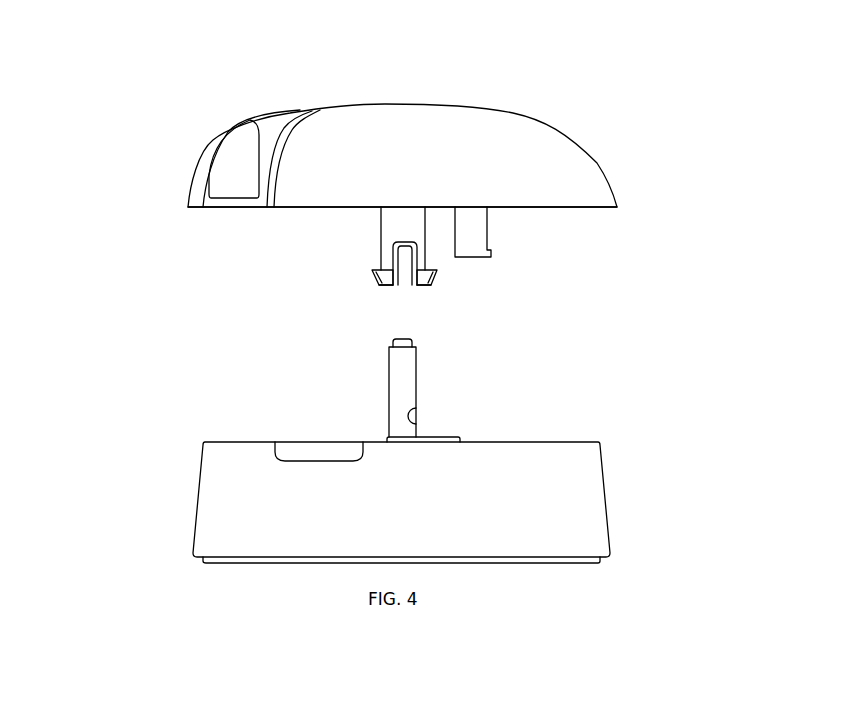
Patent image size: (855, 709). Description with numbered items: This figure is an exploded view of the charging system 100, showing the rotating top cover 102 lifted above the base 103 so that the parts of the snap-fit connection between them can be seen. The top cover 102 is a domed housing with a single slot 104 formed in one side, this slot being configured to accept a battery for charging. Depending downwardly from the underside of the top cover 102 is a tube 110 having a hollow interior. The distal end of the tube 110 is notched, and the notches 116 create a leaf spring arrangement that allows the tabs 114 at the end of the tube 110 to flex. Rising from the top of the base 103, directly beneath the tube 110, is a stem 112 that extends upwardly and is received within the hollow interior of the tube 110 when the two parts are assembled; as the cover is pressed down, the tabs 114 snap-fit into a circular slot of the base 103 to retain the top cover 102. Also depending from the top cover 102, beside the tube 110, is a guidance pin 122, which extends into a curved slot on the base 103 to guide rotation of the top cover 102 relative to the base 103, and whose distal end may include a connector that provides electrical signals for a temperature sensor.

The charging system 100 is at (577, 77).
The top cover 102 is at (580, 175).
The base 103 is at (580, 509).
The slot 104 is at (233, 176).
The tube 110 is at (393, 228).
The stem 112 is at (407, 375).
The tabs 114 is at (435, 278).
The notches 116 is at (403, 262).
The guidance pin 122 is at (475, 228).